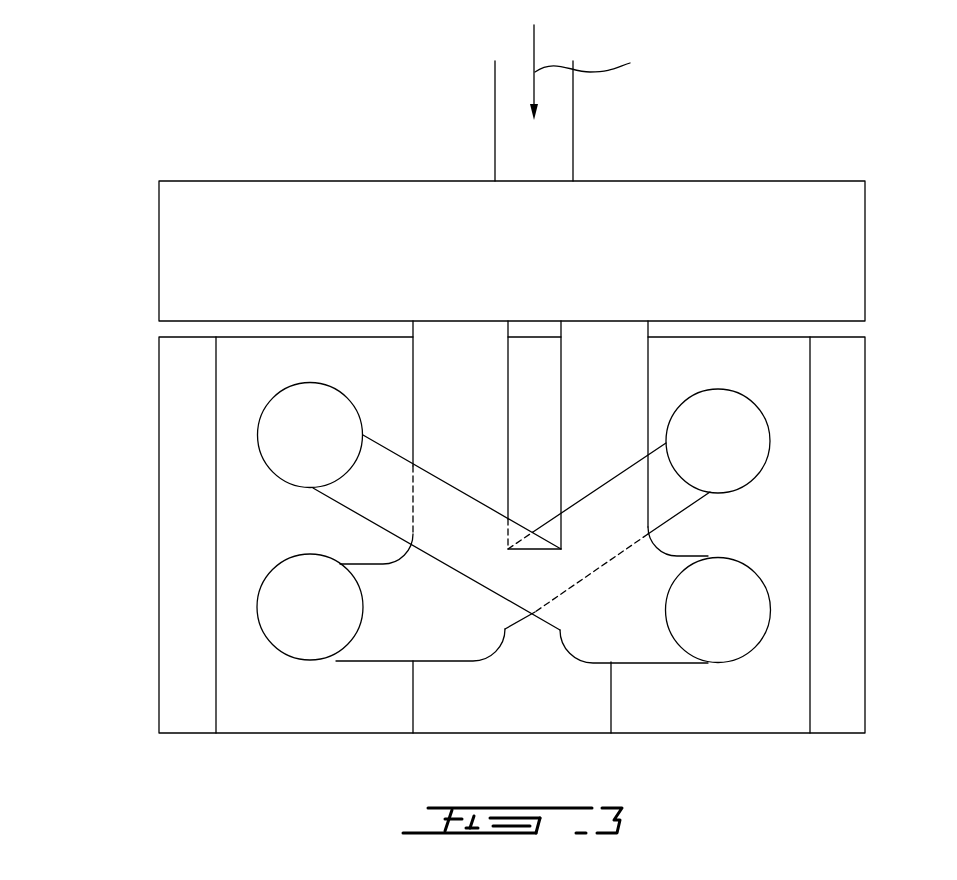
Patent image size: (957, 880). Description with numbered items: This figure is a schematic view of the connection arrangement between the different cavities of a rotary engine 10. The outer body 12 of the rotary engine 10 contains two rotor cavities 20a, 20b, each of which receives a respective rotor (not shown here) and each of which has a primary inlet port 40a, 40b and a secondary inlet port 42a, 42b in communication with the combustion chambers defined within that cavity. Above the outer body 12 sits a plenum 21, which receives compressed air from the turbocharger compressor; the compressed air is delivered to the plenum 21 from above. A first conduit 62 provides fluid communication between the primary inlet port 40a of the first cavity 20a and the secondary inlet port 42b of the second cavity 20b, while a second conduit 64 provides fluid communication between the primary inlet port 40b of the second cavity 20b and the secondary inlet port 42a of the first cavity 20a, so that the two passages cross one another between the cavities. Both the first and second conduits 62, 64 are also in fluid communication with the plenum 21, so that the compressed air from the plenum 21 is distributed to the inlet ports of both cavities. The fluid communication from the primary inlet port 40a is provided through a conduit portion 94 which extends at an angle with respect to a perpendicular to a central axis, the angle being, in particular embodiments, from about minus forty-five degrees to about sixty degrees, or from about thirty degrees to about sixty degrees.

The rotary engine 10 is at (95, 381).
The outer body 12 is at (779, 741).
The first rotor cavity 20a is at (298, 705).
The second rotor cavity 20b is at (713, 705).
The plenum 21 is at (546, 258).
The primary inlet port of the first cavity 40a is at (287, 435).
The primary inlet port of the second cavity 40b is at (737, 440).
The secondary inlet port of the first cavity 42a is at (303, 609).
The secondary inlet port of the second cavity 42b is at (735, 608).
The first conduit 62 is at (609, 378).
The second conduit 64 is at (440, 390).
The conduit portion 94 is at (358, 490).